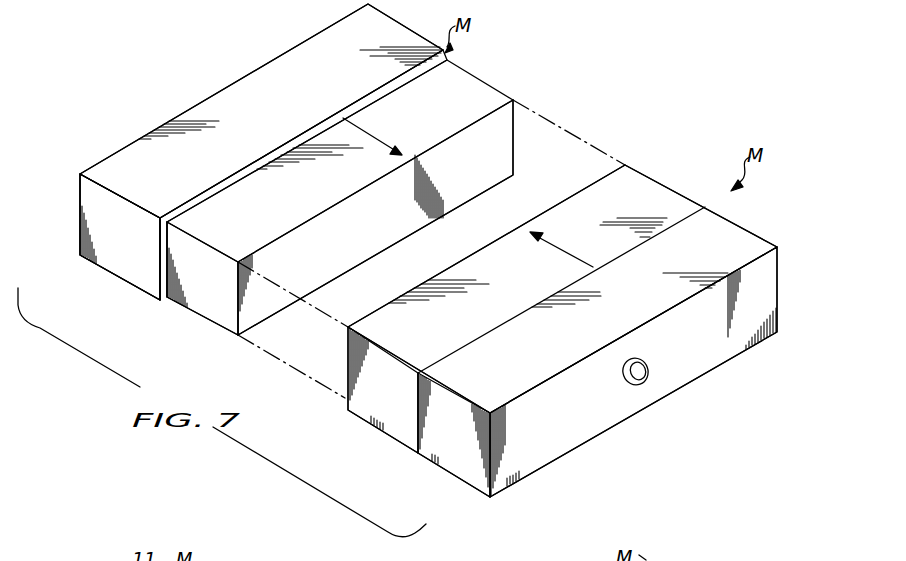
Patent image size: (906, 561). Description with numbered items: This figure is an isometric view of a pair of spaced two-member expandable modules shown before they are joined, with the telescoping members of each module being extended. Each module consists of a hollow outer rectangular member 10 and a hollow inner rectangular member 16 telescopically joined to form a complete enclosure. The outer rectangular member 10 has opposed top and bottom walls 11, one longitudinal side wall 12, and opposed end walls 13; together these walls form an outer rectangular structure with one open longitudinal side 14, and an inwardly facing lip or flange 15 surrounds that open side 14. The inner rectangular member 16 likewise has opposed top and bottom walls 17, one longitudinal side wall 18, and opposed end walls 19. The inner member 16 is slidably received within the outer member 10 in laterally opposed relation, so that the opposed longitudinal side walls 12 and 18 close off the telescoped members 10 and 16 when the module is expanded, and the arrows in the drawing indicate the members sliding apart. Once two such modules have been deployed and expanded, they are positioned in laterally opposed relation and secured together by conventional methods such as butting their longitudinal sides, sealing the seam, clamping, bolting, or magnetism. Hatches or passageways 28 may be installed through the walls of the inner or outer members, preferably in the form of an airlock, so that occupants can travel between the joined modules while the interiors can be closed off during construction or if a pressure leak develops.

The outer rectangular member 10 is at (299, 98).
The top and bottom walls 11 is at (197, 113).
The longitudinal side wall 12 is at (80, 217).
The end walls 13 is at (131, 266).
The open longitudinal side 14 is at (199, 206).
The lip or flange 15 is at (396, 80).
The inner rectangular member 16 is at (309, 207).
The top and bottom walls 17 is at (492, 90).
The longitudinal side wall 18 is at (348, 262).
The end walls 19 is at (208, 304).
The hatches or passageways 28 is at (650, 370).